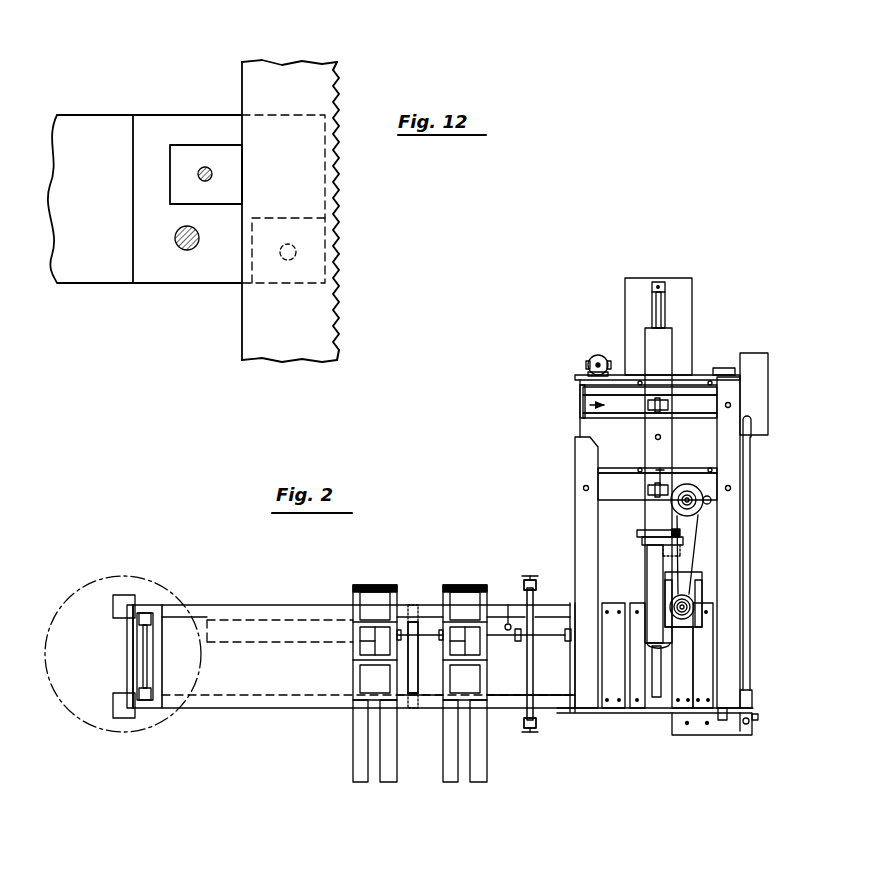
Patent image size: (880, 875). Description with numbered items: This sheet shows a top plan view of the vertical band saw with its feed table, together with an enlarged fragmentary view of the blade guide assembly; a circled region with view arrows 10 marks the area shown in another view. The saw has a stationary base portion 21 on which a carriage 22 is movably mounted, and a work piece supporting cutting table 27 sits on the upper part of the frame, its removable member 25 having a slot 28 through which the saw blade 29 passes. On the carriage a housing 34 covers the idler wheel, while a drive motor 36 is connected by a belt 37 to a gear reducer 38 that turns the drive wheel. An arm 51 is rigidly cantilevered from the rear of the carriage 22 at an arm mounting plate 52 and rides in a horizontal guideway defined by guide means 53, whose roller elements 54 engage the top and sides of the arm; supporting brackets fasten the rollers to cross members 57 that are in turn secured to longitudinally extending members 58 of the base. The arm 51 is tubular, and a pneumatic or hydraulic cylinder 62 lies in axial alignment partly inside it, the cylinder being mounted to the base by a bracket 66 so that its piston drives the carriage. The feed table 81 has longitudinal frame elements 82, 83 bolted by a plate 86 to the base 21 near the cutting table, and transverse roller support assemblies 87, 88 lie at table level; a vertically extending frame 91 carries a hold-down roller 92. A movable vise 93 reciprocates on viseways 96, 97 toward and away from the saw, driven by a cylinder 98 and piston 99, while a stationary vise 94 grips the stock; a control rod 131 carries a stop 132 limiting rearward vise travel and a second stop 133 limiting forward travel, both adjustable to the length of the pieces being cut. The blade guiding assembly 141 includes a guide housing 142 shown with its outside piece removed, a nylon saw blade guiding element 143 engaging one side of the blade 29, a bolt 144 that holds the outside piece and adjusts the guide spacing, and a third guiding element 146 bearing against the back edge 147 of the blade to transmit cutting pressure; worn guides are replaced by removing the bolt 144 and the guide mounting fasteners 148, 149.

In FIG. 2, the section line of end view 10 is at (62, 605).
In FIG. 2, the stationary base portion 21 is at (758, 567).
In FIG. 2, the carriage 22 is at (622, 557).
In FIG. 2, the removable member 25 is at (662, 673).
In FIG. 2, the work piece supporting cutting table 27 is at (621, 712).
In FIG. 2, the slot or opening 28 is at (658, 704).
In FIG. 12, the saw blade 29 is at (328, 325).
In FIG. 2, the housing 34 is at (646, 578).
In FIG. 2, the drive motor 36 is at (705, 488).
In FIG. 2, the belt 37 is at (693, 539).
In FIG. 2, the gear reducer 38 is at (704, 592).
In FIG. 2, the arm 51 is at (673, 341).
In FIG. 2, the arm mounting plate 52 is at (636, 531).
In FIG. 2, the guide means 53 is at (580, 403).
In FIG. 2, the roller elements 54 is at (660, 397).
In FIG. 2, the cross members 57 is at (701, 407).
In FIG. 2, the longitudinally extending members 58 is at (735, 410).
In FIG. 2, the cylinder 62 is at (667, 297).
In FIG. 2, the bracket 66 is at (693, 291).
In FIG. 2, the feed table 81 is at (274, 715).
In FIG. 2, the feed table frame element 82 is at (296, 710).
In FIG. 2, the feed table frame element 83 is at (308, 605).
In FIG. 2, the plate 86 is at (571, 680).
In FIG. 2, the roller support assembly 87 is at (152, 643).
In FIG. 2, the roller support assembly 88 is at (422, 645).
In FIG. 2, the vertically extending frame 91 is at (522, 730).
In FIG. 2, the hold-down roller 92 is at (526, 598).
In FIG. 2, the movable vise 93 is at (468, 585).
In FIG. 2, the stationary vise 94 is at (377, 585).
In FIG. 2, the viseway 96 is at (494, 694).
In FIG. 2, the viseway 97 is at (508, 622).
In FIG. 2, the cylinder 98 is at (293, 644).
In FIG. 2, the piston 99 is at (405, 600).
In FIG. 2, the control rod 131 is at (545, 636).
In FIG. 2, the stop 132 is at (442, 645).
In FIG. 2, the second stop 133 is at (517, 641).
In FIG. 12, the band saw blade guiding assembly 141 is at (117, 293).
In FIG. 12, the guide housing 142 is at (172, 285).
In FIG. 12, the saw blade guiding element 143 is at (310, 218).
In FIG. 12, the bolt 144 is at (196, 252).
In FIG. 12, the third guiding element 146 is at (185, 156).
In FIG. 12, the back edge 147 is at (241, 76).
In FIG. 12, the guide mounting fastener 148 is at (198, 176).
In FIG. 12, the guide mounting fastener 149 is at (296, 254).